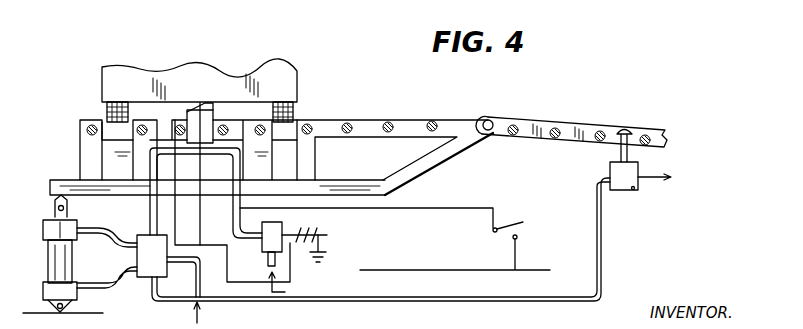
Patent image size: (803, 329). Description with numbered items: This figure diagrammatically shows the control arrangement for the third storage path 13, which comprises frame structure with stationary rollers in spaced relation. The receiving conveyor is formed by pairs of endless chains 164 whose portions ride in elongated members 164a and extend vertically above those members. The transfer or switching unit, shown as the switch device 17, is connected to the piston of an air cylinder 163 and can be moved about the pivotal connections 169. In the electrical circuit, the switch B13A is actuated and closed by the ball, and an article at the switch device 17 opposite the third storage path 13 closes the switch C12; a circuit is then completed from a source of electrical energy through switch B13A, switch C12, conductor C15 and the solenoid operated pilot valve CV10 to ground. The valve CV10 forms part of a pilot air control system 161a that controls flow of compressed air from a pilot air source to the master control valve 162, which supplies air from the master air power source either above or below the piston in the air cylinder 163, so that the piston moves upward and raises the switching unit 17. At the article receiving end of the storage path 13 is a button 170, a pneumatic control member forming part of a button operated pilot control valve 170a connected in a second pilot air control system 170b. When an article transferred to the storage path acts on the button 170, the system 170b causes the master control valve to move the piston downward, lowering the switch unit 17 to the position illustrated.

The endless chains 164 is at (110, 110).
The elongated members 164a is at (115, 125).
The switch C12 is at (188, 102).
The switch device 17 is at (432, 121).
The pivotal connections 169 is at (500, 109).
The third storage path 13 is at (572, 139).
The air cylinder 163 is at (48, 268).
The master control valve 162 is at (146, 272).
The conductor C15 is at (175, 210).
The pilot air control system 161a is at (261, 247).
The solenoid operated pilot valve CV10 is at (313, 250).
The switch B13A is at (510, 223).
The button 170 is at (628, 128).
The button operated pilot control valve 170a is at (635, 192).
The pilot air control system 170b is at (601, 278).